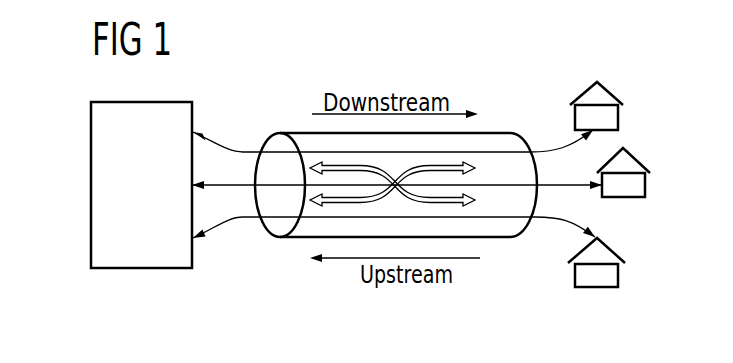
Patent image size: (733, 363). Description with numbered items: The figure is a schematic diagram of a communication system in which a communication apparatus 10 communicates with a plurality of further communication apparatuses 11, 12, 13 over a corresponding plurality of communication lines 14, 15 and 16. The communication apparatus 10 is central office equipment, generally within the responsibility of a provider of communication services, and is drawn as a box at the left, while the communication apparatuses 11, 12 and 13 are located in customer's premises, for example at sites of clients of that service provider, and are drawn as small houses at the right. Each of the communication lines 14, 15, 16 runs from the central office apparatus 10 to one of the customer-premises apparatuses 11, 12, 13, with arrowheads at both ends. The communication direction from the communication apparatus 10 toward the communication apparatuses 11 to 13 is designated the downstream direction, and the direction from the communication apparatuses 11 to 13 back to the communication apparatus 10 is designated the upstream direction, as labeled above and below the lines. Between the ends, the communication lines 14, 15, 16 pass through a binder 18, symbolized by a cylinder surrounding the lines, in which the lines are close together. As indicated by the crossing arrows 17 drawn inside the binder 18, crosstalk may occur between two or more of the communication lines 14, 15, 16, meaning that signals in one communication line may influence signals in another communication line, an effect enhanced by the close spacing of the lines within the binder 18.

The communication apparatus 10 is at (143, 269).
The communication apparatus 11 is at (618, 119).
The communication apparatus 12 is at (623, 198).
The communication apparatus 13 is at (597, 288).
The communication line 14 is at (245, 152).
The communication line 15 is at (558, 182).
The communication line 16 is at (237, 219).
The arrows 17 is at (338, 203).
The binder 18 is at (497, 132).